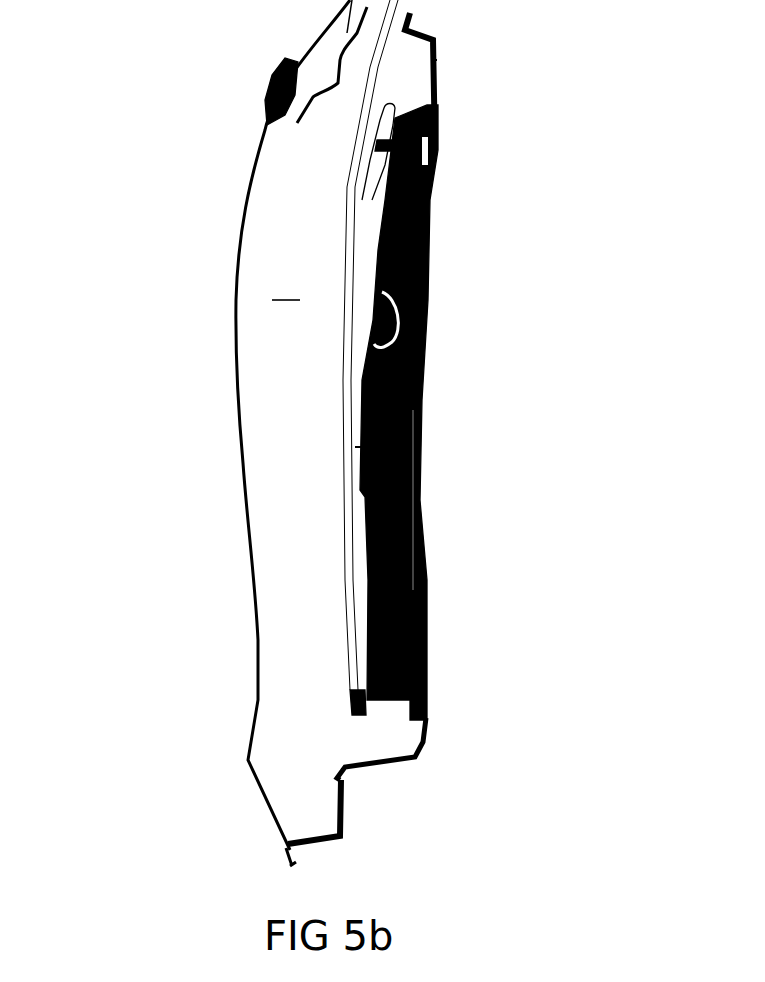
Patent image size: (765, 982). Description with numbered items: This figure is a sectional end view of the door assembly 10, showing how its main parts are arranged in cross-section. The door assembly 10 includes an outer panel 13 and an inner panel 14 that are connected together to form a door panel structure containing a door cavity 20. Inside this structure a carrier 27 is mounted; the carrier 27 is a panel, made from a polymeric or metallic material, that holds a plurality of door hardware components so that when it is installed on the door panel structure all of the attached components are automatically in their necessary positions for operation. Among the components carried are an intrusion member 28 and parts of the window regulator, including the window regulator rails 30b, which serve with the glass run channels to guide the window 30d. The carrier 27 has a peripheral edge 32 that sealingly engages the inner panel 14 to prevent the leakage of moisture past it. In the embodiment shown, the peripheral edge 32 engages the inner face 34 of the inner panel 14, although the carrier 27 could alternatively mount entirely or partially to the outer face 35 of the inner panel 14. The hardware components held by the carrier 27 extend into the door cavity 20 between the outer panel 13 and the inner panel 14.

The door assembly 10 is at (133, 122).
The outer panel 13 is at (243, 462).
The inner panel 14 is at (435, 70).
The door cavity 20 is at (300, 300).
The carrier 27 is at (392, 420).
The intrusion member 28 is at (392, 319).
The window regulator rails 30b is at (345, 545).
The window 30d is at (372, 57).
The peripheral edge 32 is at (437, 100).
The inner face of the inner panel 34 is at (436, 75).
The outer face of the inner panel 35 is at (430, 62).